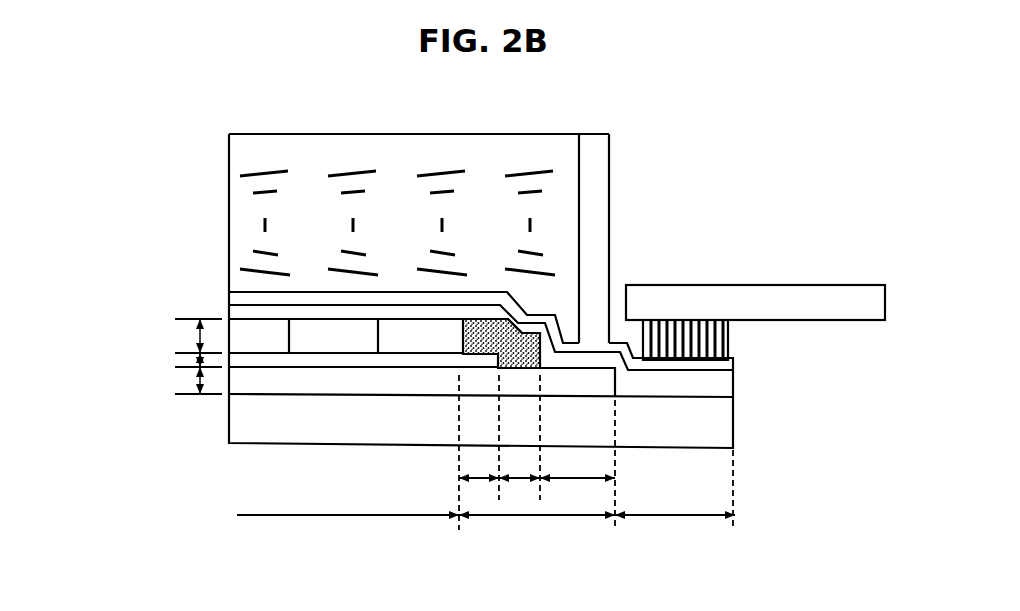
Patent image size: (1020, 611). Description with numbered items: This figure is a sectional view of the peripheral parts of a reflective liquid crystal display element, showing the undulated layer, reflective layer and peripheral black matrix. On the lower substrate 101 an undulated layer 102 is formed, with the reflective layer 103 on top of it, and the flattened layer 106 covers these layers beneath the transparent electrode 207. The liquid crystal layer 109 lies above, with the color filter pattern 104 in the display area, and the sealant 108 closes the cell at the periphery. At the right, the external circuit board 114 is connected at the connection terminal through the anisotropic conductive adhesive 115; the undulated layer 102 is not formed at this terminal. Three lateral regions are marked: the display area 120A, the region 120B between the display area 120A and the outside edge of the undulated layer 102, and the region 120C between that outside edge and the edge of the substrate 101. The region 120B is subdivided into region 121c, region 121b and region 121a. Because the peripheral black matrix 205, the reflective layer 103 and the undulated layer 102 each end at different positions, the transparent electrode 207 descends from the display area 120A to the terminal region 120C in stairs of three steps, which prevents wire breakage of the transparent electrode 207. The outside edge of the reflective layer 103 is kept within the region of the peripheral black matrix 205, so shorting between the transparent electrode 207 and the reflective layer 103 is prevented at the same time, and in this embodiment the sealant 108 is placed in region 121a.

The lower substrate 101 is at (720, 422).
The undulated layer 102 is at (287, 378).
The reflective layer 103 is at (285, 360).
The color filter pattern 104 is at (315, 340).
The flattened layer 106 is at (720, 383).
The sealant 108 is at (600, 178).
The liquid crystal layer 109 is at (248, 218).
The external circuit board 114 is at (747, 300).
The anisotropic conductive adhesive 115 is at (718, 332).
The peripheral black matrix 205 is at (540, 332).
The transparent electrode 207 is at (727, 367).
The display area 120A is at (348, 528).
The region between display area and outside edge of undulated layer 120B is at (537, 528).
The region between outside edge of undulated layer and substrate edge 120C is at (675, 528).
The region 121a is at (590, 489).
The region 121b is at (515, 488).
The region 121c is at (477, 489).